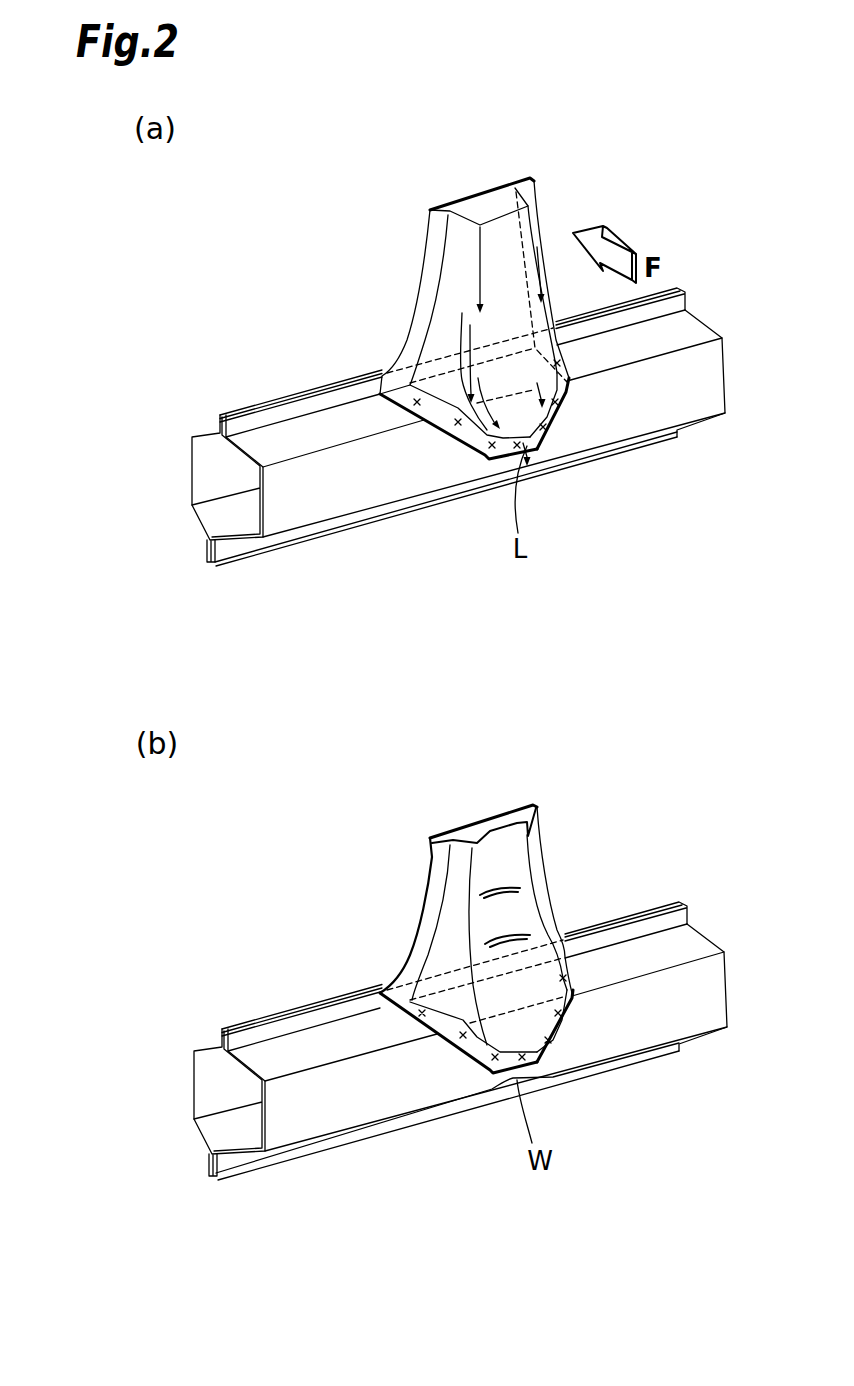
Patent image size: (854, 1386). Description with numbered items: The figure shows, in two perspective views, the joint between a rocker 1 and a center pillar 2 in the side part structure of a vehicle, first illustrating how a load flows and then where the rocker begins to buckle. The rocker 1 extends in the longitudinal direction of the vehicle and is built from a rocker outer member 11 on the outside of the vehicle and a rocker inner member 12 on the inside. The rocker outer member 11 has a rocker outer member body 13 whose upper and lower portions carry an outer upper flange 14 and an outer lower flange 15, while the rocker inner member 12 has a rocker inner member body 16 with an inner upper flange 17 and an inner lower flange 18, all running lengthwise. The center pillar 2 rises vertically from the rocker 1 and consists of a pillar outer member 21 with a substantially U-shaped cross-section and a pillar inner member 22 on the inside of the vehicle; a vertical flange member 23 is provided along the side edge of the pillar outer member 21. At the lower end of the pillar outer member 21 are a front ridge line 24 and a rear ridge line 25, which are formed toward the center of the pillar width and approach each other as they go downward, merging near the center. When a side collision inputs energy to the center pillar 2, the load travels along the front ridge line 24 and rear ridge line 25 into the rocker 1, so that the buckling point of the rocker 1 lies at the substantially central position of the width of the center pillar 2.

The rocker 1 is at (274, 378).
The center pillar 2 is at (543, 190).
The rocker outer member 11 is at (352, 532).
The rocker inner member 12 is at (190, 432).
The rocker outer member body 13 is at (635, 416).
The outer upper flange 14 is at (324, 402).
The outer lower flange 15 is at (235, 550).
The rocker inner member body 16 is at (213, 470).
The inner upper flange 17 is at (225, 408).
The inner lower flange 18 is at (208, 553).
The pillar outer member 21 is at (527, 233).
The pillar inner member 22 is at (477, 202).
The vertical flange member 23 is at (425, 302).
The front ridge line 24 is at (478, 423).
The rear ridge line 25 is at (557, 422).